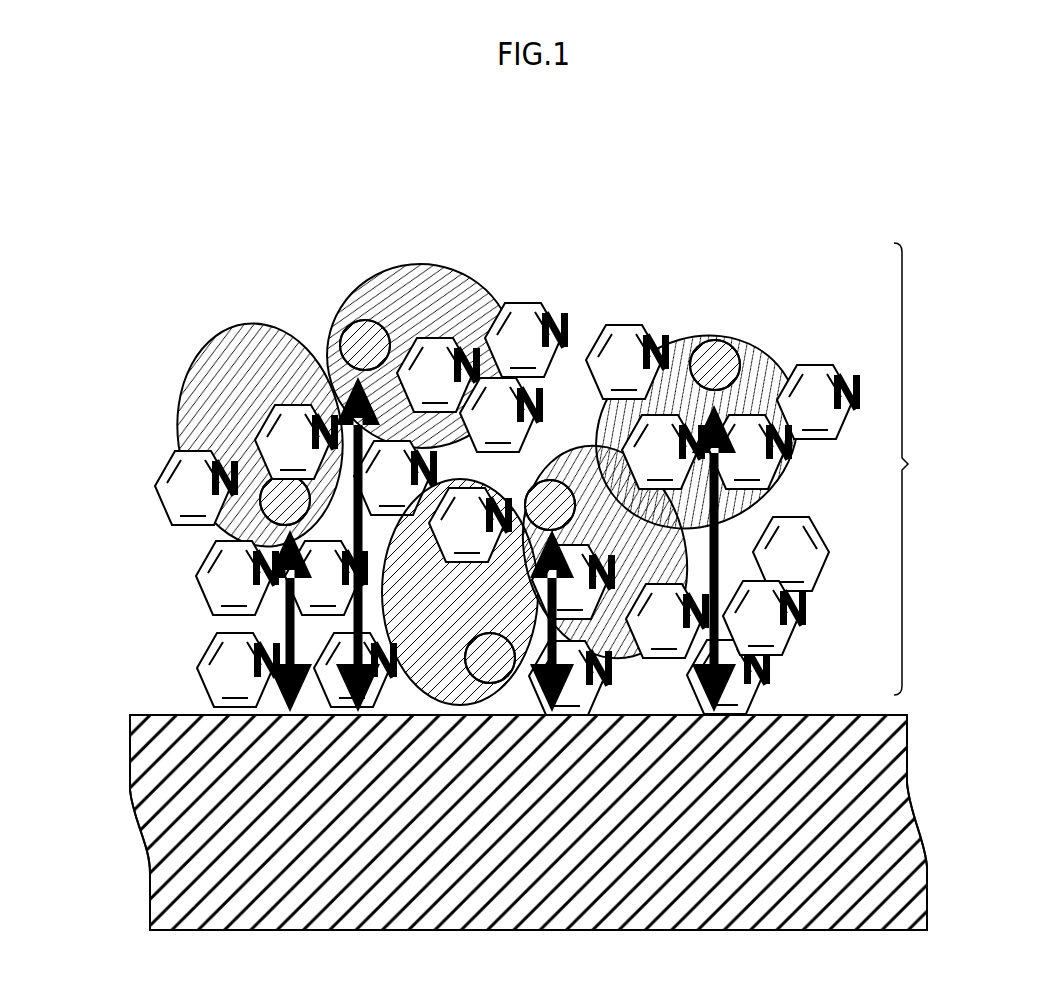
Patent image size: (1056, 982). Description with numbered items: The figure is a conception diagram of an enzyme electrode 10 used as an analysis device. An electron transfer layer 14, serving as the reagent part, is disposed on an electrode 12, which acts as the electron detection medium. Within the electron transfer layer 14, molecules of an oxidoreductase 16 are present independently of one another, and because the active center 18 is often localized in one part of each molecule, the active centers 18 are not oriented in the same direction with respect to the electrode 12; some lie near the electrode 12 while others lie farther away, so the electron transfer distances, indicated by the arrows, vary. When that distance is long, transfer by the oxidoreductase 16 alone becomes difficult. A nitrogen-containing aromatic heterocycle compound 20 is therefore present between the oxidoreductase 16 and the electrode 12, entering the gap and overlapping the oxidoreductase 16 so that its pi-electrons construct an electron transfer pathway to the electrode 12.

The enzyme electrode 10 is at (847, 117).
The electrode 12 is at (930, 886).
The electron transfer layer 14 is at (922, 463).
The oxidoreductase 16 is at (200, 354).
The active center 18 is at (753, 340).
The aromatic heterocycle compound 20 is at (553, 302).